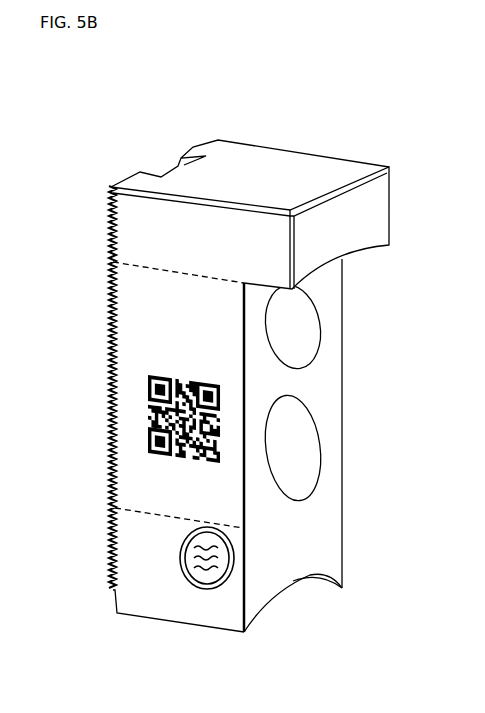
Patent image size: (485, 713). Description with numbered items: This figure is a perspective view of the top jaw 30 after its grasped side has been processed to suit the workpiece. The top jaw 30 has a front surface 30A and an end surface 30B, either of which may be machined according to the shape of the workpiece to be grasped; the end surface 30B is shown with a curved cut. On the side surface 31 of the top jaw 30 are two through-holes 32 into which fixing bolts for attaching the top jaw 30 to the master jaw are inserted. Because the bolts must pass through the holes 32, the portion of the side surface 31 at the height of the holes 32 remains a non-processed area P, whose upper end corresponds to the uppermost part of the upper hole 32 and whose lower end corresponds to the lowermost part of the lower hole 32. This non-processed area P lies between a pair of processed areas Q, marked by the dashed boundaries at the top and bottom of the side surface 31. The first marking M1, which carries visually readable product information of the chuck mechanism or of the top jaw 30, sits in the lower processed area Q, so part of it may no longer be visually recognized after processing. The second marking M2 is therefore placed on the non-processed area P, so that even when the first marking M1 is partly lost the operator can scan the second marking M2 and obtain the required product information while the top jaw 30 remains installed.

The top jaw 30 is at (267, 177).
The front surface 30A is at (317, 535).
The end surface 30B is at (283, 587).
The side surface 31 is at (172, 352).
The hole 32 is at (295, 317).
The non-processed area P is at (147, 332).
The processed area Q is at (147, 232).
The first marking M1 is at (182, 590).
The second marking M2 is at (149, 404).